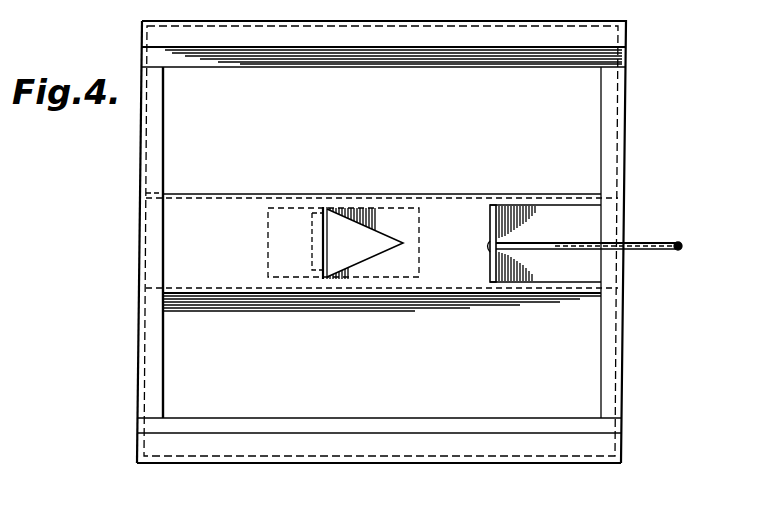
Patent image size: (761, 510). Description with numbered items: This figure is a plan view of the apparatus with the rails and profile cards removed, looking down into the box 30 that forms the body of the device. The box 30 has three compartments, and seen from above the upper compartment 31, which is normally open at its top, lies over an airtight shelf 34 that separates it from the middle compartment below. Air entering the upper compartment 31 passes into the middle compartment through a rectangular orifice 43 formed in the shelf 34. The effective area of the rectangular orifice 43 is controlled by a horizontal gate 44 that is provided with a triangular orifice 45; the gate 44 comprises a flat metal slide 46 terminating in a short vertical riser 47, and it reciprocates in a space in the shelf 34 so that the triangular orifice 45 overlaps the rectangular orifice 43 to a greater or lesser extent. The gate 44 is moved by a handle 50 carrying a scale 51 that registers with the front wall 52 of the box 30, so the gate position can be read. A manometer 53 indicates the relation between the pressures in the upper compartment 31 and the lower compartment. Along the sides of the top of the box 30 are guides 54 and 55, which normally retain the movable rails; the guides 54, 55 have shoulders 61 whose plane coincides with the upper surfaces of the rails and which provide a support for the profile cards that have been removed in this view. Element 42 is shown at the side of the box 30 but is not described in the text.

The box 30 is at (626, 345).
The upper compartment 31 is at (586, 124).
The airtight shelf 34 is at (586, 394).
The side wall 42 is at (137, 323).
The rectangular orifice 43 is at (270, 233).
The horizontal gate 44 is at (500, 264).
The triangular orifice 45 is at (354, 265).
The flat metal slide 46 is at (460, 268).
The vertical riser 47 is at (499, 218).
The handle 50 is at (681, 243).
The scale 51 is at (662, 251).
The front wall 52 is at (627, 195).
The manometer 53 is at (392, 466).
The guide 54 is at (442, 68).
The guide 55 is at (453, 418).
The shoulders 61 is at (357, 61).